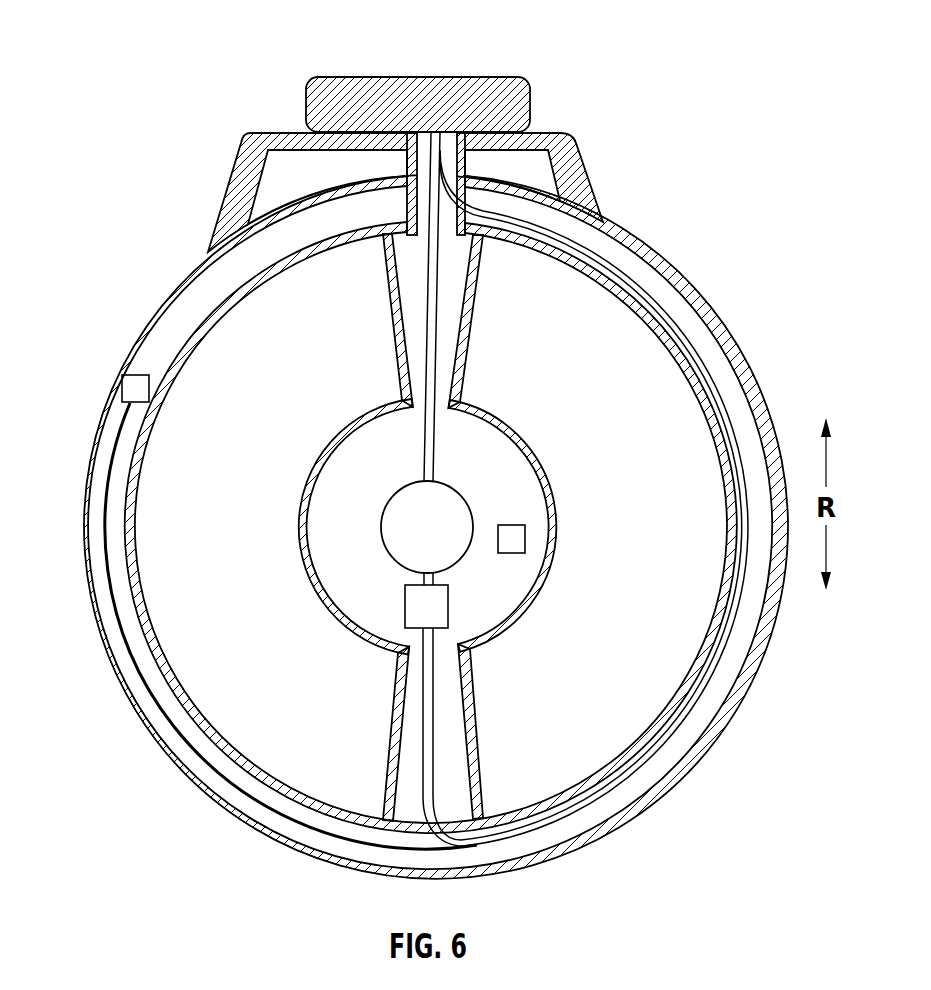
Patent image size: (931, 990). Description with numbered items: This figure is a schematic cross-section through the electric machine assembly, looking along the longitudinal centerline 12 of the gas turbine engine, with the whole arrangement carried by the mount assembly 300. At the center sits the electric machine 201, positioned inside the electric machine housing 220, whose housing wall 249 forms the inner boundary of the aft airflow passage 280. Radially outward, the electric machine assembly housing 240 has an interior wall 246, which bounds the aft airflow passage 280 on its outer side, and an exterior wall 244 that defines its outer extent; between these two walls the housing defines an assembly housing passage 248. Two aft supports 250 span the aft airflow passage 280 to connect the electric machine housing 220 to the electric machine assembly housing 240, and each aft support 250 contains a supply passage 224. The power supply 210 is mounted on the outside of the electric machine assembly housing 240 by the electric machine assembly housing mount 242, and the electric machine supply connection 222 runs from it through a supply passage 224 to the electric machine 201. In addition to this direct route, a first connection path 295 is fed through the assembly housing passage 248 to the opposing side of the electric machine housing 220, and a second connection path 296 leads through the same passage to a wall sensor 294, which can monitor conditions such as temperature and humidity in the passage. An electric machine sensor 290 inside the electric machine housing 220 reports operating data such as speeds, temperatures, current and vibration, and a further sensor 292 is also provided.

The power supply 210 is at (442, 93).
The mount assembly 300 is at (414, 443).
The electric machine assembly housing mount 242 is at (232, 193).
The supply passage 224 is at (423, 182).
The exterior wall 244 is at (165, 292).
The electric machine assembly housing 240 is at (153, 310).
The wall sensor 294 is at (137, 390).
The second connection path 296 is at (108, 490).
The electric machine supply connection 222 is at (452, 255).
The aft support 250 is at (392, 312).
The electric machine housing 220 is at (425, 517).
The housing wall 249 is at (537, 452).
The electric machine sensor 290 is at (512, 533).
The electric machine 201 is at (411, 528).
The longitudinal centerline 12 is at (425, 542).
The aft airflow passage 280 is at (208, 523).
The sensor 292 is at (420, 607).
The first connection path 295 is at (722, 637).
The assembly housing passage 248 is at (170, 702).
The interior wall 246 is at (644, 718).